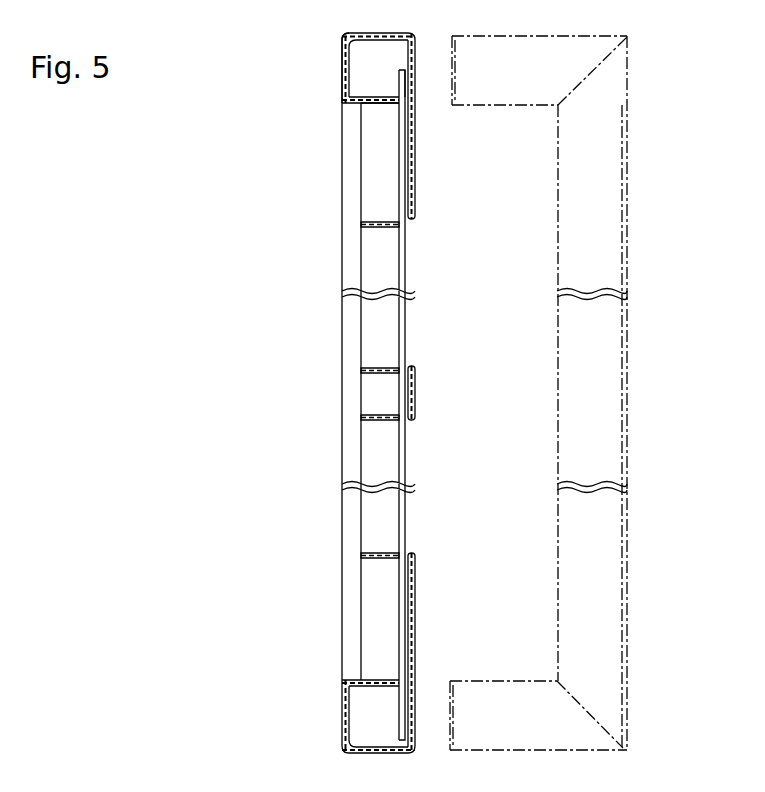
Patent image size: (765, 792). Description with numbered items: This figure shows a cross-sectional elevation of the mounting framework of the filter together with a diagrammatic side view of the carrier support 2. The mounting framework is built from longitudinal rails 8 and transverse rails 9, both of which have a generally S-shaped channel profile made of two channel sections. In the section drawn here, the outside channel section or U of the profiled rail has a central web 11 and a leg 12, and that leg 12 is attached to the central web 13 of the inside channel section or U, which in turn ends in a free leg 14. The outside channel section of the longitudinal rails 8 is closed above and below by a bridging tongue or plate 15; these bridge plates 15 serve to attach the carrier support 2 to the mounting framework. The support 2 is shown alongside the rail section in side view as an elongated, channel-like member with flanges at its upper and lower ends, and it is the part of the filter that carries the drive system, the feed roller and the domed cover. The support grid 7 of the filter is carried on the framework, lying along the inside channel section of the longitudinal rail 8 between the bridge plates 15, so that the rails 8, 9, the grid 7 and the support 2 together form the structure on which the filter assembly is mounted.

The carrier support 2 is at (632, 384).
The support grid 7 is at (400, 333).
The longitudinal rails 8 is at (352, 318).
The transverse rails 9 is at (340, 65).
The central web 11 is at (343, 88).
The leg 12 is at (366, 104).
The central web 13 is at (414, 175).
The free leg 14 is at (375, 227).
The bridging plate 15 is at (411, 88).